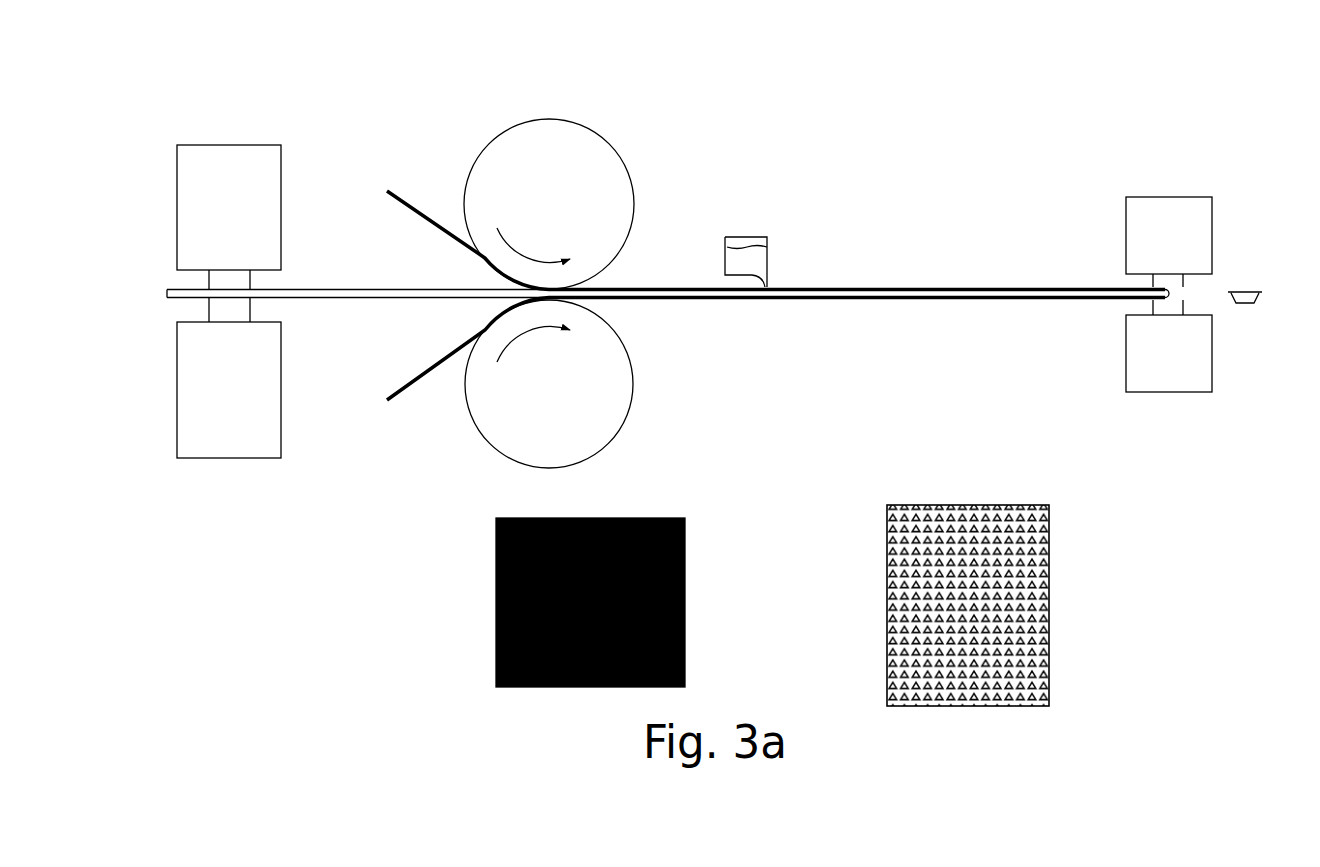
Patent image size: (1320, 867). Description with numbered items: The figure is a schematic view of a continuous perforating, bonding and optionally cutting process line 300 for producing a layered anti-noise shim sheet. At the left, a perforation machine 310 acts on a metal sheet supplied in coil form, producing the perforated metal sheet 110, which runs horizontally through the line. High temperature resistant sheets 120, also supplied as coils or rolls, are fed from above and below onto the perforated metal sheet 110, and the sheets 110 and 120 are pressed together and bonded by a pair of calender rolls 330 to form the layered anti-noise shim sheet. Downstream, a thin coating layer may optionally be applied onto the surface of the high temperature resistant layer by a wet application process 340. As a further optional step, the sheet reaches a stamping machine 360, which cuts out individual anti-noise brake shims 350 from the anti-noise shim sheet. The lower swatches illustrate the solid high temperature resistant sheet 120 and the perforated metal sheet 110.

The continuous perforating, bonding and optionally cutting process line 300 is at (931, 146).
The perforation machine 310 is at (264, 114).
The pair of calender rolls 330 is at (568, 117).
The wet application process 340 is at (749, 230).
The anti-noise brake shims 350 is at (1249, 288).
The stamping machine 360 is at (1174, 194).
The perforated metal sheet 110 is at (668, 482).
The high temperature resistant sheets 120 is at (755, 425).